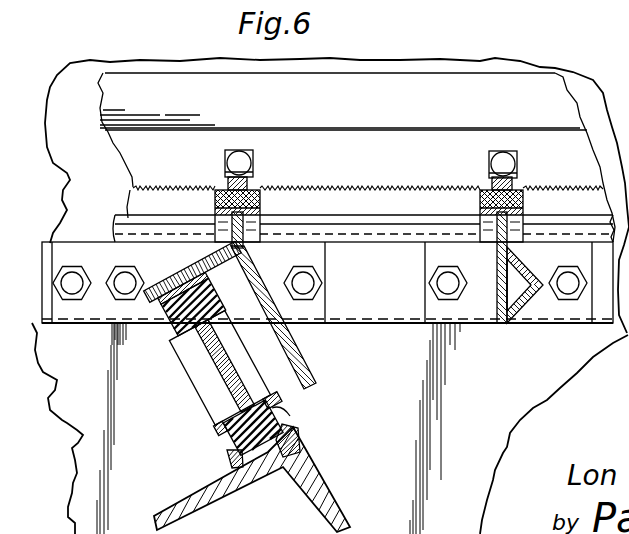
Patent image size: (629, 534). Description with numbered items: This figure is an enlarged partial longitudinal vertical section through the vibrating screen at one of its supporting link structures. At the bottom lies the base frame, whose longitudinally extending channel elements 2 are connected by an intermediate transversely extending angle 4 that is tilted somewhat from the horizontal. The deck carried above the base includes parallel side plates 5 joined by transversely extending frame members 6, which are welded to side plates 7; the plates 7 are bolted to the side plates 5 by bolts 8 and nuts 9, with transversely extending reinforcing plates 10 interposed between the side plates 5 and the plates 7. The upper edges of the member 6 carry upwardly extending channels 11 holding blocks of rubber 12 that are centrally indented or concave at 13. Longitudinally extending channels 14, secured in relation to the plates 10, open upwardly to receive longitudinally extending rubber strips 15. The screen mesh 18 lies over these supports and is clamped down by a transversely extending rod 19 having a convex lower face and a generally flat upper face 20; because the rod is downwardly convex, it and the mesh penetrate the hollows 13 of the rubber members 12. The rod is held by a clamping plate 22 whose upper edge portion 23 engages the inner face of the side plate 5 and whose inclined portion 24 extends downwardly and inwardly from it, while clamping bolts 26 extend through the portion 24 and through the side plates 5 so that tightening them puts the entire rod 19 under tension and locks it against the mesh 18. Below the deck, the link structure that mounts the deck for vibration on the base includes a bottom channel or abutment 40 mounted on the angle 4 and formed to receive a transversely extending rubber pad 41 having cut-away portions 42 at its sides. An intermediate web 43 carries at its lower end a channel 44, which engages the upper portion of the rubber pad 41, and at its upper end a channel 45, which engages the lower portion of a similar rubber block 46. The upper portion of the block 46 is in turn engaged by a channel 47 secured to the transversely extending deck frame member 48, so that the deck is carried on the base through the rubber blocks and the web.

The channel elements 2 is at (522, 396).
The intermediate transversely extending angles 4 is at (315, 493).
The side plates 5 is at (586, 88).
The transversely extending frame members 6 is at (240, 232).
The side plates 7 is at (331, 324).
The bolts 8 is at (73, 281).
The nuts 9 is at (121, 289).
The transversely extending reinforcing plates 10 is at (387, 322).
The upwardly extending channels 11 is at (262, 212).
The blocks of rubber 12 is at (217, 201).
The concave indentation 13 is at (259, 203).
The longitudinally extending channels 14 is at (115, 232).
The longitudinally extending rubber strips 15 is at (117, 227).
The screen mesh 18 is at (349, 186).
The transversely extending rods 19 is at (250, 183).
The flat upper face 20 is at (226, 167).
The clamping plates 22 is at (463, 84).
The upper edge portion 23 is at (397, 88).
The inclined portion 24 is at (135, 147).
The clamping bolts 26 is at (252, 157).
The bottom channel or abutment 40 is at (294, 431).
The transversely extending rubber pad 41 is at (236, 441).
The cut-away portions 42 is at (231, 452).
The intermediate web 43 is at (217, 373).
The lower channel 44 is at (228, 420).
The upper channel 45 is at (172, 343).
The rubber block 46 is at (199, 307).
The channel 47 is at (148, 320).
The transversely extending deck frame member 48 is at (188, 273).